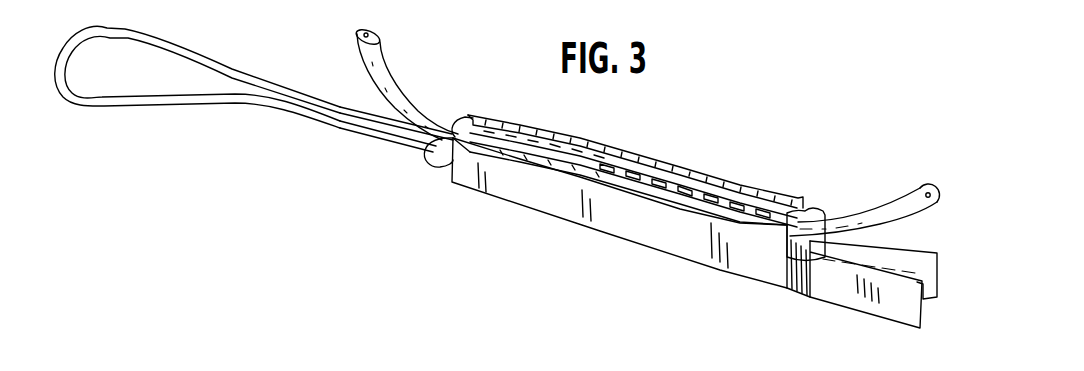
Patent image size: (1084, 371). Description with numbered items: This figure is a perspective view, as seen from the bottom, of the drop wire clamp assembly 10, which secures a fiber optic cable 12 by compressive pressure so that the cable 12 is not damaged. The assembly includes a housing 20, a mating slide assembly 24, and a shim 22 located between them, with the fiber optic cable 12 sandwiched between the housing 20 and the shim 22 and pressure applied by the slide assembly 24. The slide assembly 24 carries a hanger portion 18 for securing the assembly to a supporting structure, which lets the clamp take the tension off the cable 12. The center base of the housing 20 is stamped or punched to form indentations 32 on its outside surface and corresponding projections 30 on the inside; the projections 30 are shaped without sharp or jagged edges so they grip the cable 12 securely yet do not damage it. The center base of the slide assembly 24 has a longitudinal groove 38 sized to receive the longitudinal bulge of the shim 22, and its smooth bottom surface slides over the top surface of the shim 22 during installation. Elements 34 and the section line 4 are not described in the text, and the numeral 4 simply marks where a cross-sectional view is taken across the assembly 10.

The drop wire clamp assembly 10 is at (692, 147).
The fiber optic cable 12 is at (384, 59).
The hanger portion 18 is at (199, 61).
The housing 20 is at (540, 203).
The shim 22 is at (820, 211).
The slide assembly 24 is at (857, 302).
The indentations 32 is at (753, 190).
The longitudinal groove 38 is at (820, 240).
The section line 4- 4 is at (551, 245).
The element 34 is at (307, 367).
The projections 30 is at (365, 367).